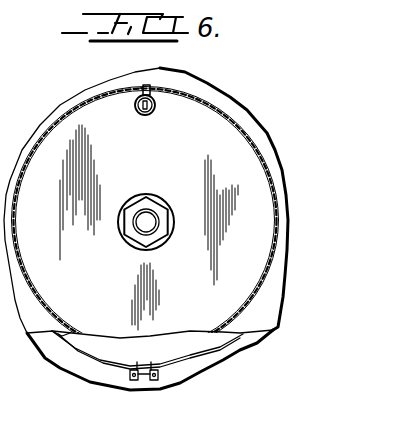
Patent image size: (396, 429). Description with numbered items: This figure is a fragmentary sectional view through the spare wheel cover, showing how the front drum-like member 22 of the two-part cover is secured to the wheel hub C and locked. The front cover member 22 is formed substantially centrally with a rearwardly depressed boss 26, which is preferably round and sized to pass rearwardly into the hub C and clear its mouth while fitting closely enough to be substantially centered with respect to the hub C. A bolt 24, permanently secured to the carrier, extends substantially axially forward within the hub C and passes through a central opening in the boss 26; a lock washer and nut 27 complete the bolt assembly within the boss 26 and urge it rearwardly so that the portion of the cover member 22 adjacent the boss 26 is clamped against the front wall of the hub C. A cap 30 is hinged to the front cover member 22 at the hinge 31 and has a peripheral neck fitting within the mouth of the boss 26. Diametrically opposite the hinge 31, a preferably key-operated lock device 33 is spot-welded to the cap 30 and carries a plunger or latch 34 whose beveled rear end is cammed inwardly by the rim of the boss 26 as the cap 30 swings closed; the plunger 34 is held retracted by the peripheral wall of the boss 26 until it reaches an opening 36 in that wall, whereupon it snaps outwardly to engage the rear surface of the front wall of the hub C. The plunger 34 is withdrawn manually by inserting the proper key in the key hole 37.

The hub C is at (215, 86).
The front drum-like member 22 is at (193, 378).
The bolt 24 is at (150, 220).
The boss 26 is at (237, 120).
The lock washer and nut 27 is at (147, 220).
The cap 30 is at (100, 343).
The hinge 31 is at (130, 372).
The lock device 33 is at (156, 109).
The plunger or latch 34 is at (143, 88).
The opening 36 is at (151, 88).
The key hole 37 is at (140, 106).